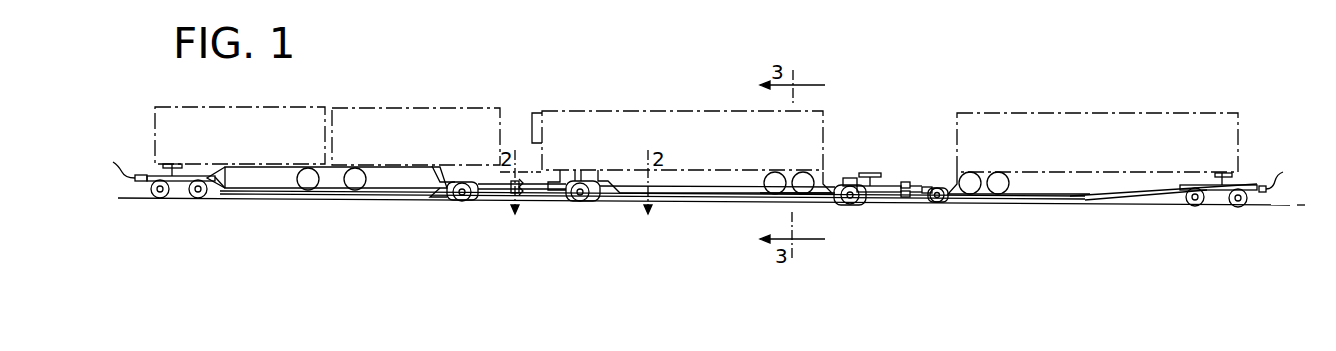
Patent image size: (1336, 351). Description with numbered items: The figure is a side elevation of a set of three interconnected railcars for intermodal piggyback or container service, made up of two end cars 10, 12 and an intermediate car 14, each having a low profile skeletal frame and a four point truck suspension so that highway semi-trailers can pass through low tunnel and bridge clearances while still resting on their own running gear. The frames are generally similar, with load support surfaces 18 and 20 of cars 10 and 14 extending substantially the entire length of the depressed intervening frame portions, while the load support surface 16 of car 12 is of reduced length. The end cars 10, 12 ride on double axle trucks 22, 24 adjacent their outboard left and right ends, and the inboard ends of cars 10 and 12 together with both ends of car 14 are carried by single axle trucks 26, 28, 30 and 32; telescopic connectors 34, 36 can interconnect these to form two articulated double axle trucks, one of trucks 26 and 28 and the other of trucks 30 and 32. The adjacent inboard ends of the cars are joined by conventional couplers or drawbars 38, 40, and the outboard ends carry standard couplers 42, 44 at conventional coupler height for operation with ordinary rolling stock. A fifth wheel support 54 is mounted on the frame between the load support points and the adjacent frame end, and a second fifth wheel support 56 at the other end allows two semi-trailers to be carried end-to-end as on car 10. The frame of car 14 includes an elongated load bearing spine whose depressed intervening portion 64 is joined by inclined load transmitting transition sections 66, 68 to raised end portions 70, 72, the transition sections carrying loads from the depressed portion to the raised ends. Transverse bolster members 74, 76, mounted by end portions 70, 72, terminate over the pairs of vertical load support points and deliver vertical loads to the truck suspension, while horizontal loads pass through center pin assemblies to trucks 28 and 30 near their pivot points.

The end car 10 is at (294, 194).
The end car 12 is at (1079, 202).
The intermediate car 14 is at (732, 196).
The load support surface 16 is at (1048, 190).
The load support surface 18 is at (401, 184).
The load support surface 20 is at (726, 184).
The double axle truck 22 is at (162, 198).
The double axle truck 24 is at (1232, 207).
The single axle truck 26 is at (459, 203).
The single axle truck 28 is at (580, 202).
The single axle truck 30 is at (855, 203).
The single axle truck 32 is at (948, 203).
The telescopic connector 34 is at (506, 196).
The telescopic connector 36 is at (891, 199).
The coupler or drawbar 38 is at (522, 197).
The coupler or drawbar 40 is at (918, 203).
The standard coupler 42 is at (117, 165).
The standard coupler 44 is at (1281, 175).
The fifth wheel support 54 is at (572, 178).
The second fifth wheel support 56 is at (870, 173).
The depressed intervening portion 64 is at (681, 198).
The inclined load transmitting transition section 66 is at (598, 197).
The inclined load transmitting transition section 68 is at (842, 205).
The raised end portion 70 is at (545, 182).
The raised end portion 72 is at (890, 190).
The transverse bolster member 74 is at (592, 180).
The transverse bolster member 76 is at (847, 178).